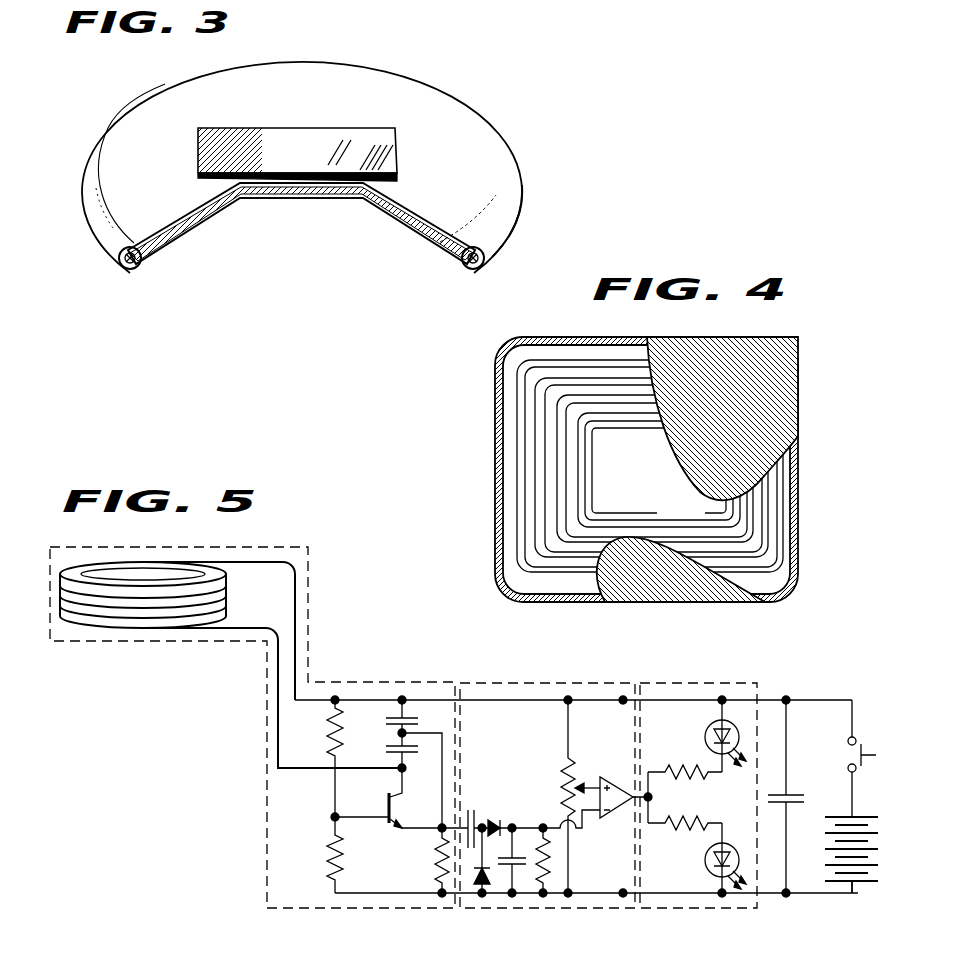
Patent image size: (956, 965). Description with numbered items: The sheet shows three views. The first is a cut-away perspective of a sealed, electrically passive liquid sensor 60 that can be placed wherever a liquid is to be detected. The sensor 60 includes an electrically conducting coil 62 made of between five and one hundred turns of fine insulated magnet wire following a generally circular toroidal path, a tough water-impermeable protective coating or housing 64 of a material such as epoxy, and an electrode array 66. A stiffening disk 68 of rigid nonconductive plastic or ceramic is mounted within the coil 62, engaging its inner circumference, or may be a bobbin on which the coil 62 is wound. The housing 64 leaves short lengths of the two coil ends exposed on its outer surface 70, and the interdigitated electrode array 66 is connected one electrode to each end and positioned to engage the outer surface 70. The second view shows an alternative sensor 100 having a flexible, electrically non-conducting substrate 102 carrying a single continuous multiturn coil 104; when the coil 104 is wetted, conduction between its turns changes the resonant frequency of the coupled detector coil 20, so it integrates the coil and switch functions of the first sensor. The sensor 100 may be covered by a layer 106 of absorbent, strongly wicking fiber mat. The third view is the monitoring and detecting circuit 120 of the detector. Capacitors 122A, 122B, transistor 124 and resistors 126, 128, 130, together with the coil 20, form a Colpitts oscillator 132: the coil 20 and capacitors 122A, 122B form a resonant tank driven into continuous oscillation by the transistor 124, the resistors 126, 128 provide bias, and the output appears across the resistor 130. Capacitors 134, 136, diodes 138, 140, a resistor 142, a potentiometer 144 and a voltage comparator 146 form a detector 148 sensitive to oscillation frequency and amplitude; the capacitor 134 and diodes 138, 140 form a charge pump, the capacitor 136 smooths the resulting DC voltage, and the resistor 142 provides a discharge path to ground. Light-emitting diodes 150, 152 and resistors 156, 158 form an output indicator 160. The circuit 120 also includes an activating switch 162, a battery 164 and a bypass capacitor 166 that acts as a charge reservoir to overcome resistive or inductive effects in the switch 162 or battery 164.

In FIG. 3, the sensor 60 is at (78, 136).
In FIG. 3, the electrically conducting coil 62 is at (141, 264).
In FIG. 3, the protective coating or housing 64 is at (508, 146).
In FIG. 3, the electrode array 66 is at (198, 160).
In FIG. 3, the stiffening disk 68 is at (364, 200).
In FIG. 3, the outer surface 70 is at (392, 93).
In FIG. 4, the sensor 100 is at (468, 356).
In FIG. 4, the flexible, electrically non-conducting substrate 102 is at (660, 486).
In FIG. 4, the multiturn coil 104 is at (515, 492).
In FIG. 4, the layer of absorbent material 106 is at (768, 386).
In FIG. 5, the coil 20 is at (98, 628).
In FIG. 5, the monitoring and detecting circuit 120 is at (160, 778).
In FIG. 5, the capacitor 122A is at (450, 676).
In FIG. 5, the capacitor 122B is at (394, 746).
In FIG. 5, the transistor 124 is at (398, 830).
In FIG. 5, the resistor 126 is at (323, 713).
In FIG. 5, the resistor 128 is at (330, 862).
In FIG. 5, the resistor 130 is at (438, 866).
In FIG. 5, the Colpitts oscillator 132 is at (315, 625).
In FIG. 5, the capacitor 134 is at (470, 812).
In FIG. 5, the capacitor 136 is at (516, 868).
In FIG. 5, the diode 138 is at (481, 890).
In FIG. 5, the diode 140 is at (493, 822).
In FIG. 5, the resistor 142 is at (550, 852).
In FIG. 5, the potentiometer 144 is at (566, 770).
In FIG. 5, the voltage comparator 146 is at (603, 790).
In FIG. 5, the detector 148 is at (548, 685).
In FIG. 5, the light-emitting diode 150 is at (708, 726).
In FIG. 5, the light-emitting diode 152 is at (710, 873).
In FIG. 5, the resistor 156 is at (706, 828).
In FIG. 5, the resistor 158 is at (672, 770).
In FIG. 5, the output indicator 160 is at (712, 685).
In FIG. 5, the activating switch 162 is at (861, 745).
In FIG. 5, the battery 164 is at (852, 893).
In FIG. 5, the bypass capacitor 166 is at (793, 796).